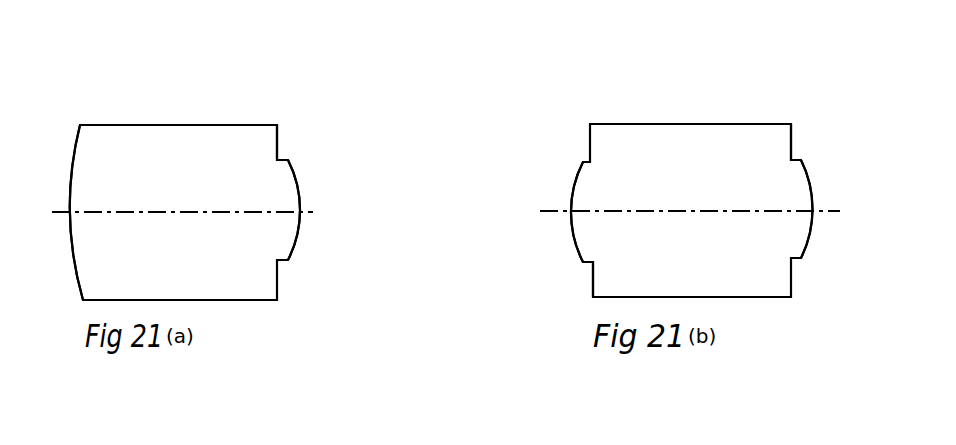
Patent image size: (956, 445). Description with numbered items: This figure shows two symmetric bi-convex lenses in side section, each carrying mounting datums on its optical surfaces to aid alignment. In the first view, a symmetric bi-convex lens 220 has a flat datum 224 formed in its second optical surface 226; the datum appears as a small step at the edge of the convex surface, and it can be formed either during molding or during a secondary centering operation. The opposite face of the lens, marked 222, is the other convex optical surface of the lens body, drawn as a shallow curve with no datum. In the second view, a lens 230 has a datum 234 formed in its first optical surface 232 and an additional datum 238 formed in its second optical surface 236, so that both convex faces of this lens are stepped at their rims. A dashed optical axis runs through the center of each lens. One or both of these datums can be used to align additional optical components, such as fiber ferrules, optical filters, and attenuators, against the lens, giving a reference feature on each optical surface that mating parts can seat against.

In FIG. 21A, the symmetric bi-convex lens 220 is at (160, 143).
In FIG. 21A, the convex lens surface 222 is at (72, 255).
In FIG. 21A, the flat datum 224 is at (282, 140).
In FIG. 21A, the second optical surface 226 is at (298, 240).
In FIG. 21B, the lens 230 is at (675, 150).
In FIG. 21B, the first optical surface 232 is at (567, 183).
In FIG. 21B, the datum 234 is at (592, 277).
In FIG. 21B, the second optical surface 236 is at (810, 235).
In FIG. 21B, the additional datum 238 is at (792, 145).